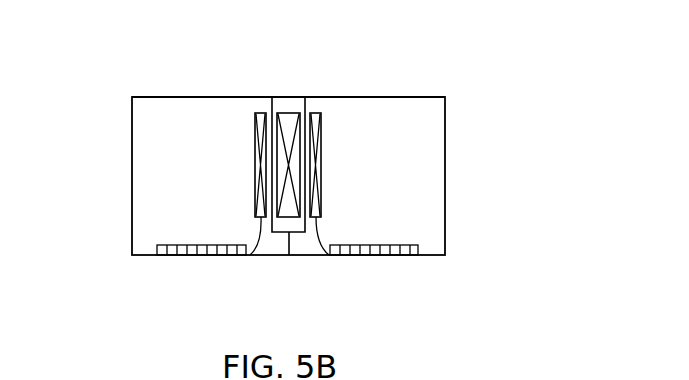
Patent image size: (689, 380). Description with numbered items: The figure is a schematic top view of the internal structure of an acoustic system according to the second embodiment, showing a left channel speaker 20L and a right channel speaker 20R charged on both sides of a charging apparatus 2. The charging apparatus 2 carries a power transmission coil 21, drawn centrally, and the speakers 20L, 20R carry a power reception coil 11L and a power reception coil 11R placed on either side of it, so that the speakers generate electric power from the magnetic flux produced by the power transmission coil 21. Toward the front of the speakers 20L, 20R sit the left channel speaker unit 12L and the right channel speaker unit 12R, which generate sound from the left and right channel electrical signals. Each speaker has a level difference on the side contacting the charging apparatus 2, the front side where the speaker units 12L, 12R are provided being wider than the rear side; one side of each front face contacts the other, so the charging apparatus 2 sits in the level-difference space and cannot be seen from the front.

The charging apparatus 2 is at (293, 97).
The power transmission coil 21 is at (283, 113).
The left channel speaker 20L is at (212, 97).
The right channel speaker 20R is at (388, 97).
The power reception coil 11L is at (250, 255).
The power reception coil 11R is at (329, 255).
The left channel speaker unit 12L is at (202, 256).
The right channel speaker unit 12R is at (375, 258).